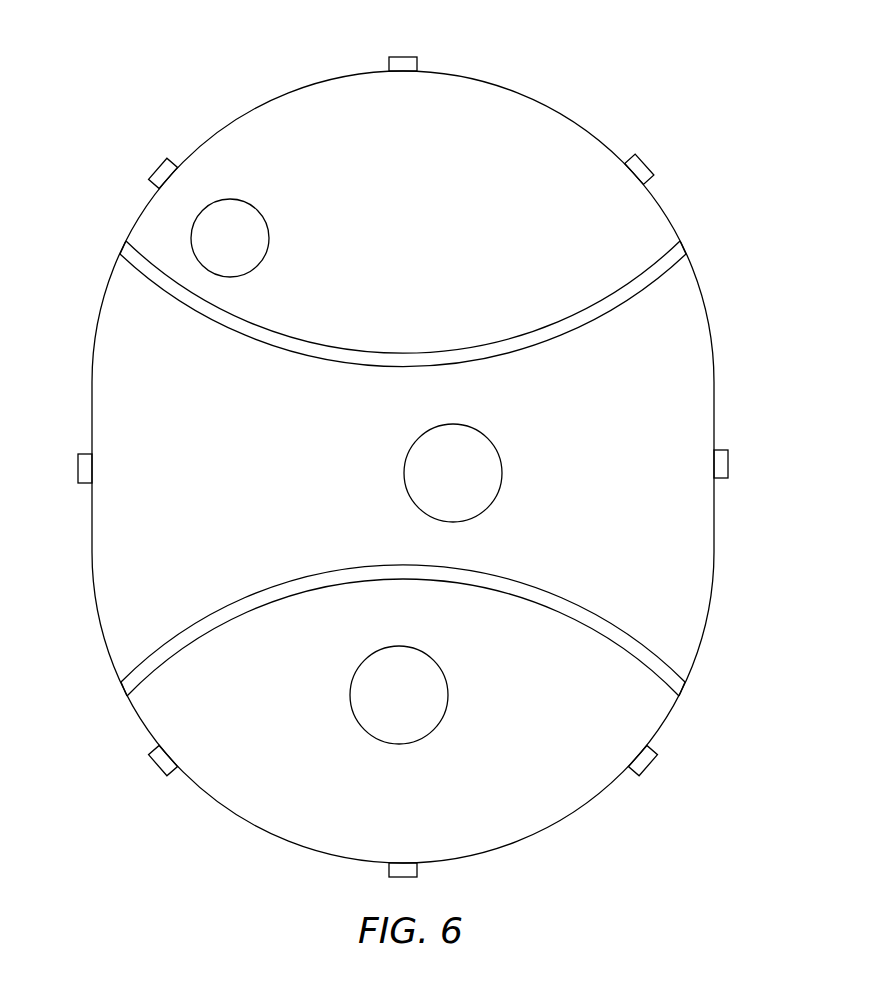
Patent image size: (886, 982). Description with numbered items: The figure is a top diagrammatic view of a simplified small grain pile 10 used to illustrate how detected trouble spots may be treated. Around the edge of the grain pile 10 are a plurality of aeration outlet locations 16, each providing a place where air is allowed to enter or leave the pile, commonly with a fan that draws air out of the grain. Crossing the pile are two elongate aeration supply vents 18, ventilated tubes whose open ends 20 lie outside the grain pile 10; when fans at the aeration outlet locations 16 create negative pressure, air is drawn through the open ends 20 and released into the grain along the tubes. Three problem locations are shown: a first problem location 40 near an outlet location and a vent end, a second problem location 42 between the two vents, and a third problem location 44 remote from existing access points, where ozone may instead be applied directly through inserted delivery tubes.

The grain pile 10 is at (203, 72).
The aeration outlet location 16 is at (398, 63).
The aeration supply vent 18 is at (616, 300).
The open end 20 is at (124, 246).
The first problem location 40 is at (246, 233).
The second problem location 42 is at (406, 729).
The third problem location 44 is at (426, 462).